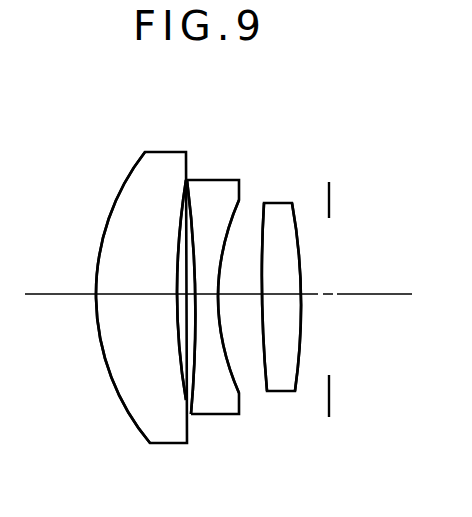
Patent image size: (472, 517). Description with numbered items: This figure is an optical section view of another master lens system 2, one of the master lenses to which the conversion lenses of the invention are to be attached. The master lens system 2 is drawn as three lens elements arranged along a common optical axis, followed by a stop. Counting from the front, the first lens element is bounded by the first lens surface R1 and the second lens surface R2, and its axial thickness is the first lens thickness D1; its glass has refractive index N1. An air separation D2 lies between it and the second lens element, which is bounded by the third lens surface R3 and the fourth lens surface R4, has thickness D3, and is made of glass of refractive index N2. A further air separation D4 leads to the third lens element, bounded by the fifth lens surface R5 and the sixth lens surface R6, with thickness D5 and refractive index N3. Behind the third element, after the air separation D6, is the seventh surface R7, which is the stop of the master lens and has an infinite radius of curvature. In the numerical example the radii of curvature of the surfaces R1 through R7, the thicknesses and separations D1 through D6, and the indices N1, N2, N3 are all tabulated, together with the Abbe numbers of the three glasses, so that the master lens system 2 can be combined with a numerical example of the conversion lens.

The master lens system 2 is at (83, 131).
The first lens surface R1 is at (137, 425).
The second lens surface R2 is at (185, 400).
The third lens surface R3 is at (197, 400).
The fourth lens surface R4 is at (237, 390).
The fifth lens surface R5 is at (263, 390).
The sixth lens surface R6 is at (300, 382).
The stop R7 is at (330, 400).
The first lens thickness D1 is at (142, 296).
The second air separation D2 is at (182, 298).
The third lens thickness D3 is at (205, 298).
The fourth air separation D4 is at (242, 297).
The fifth lens thickness D5 is at (280, 297).
The sixth air separation D6 is at (318, 297).
The refractive index of first lens element N1 is at (146, 240).
The refractive index of second lens element N2 is at (208, 240).
The refractive index of third lens element N3 is at (279, 240).